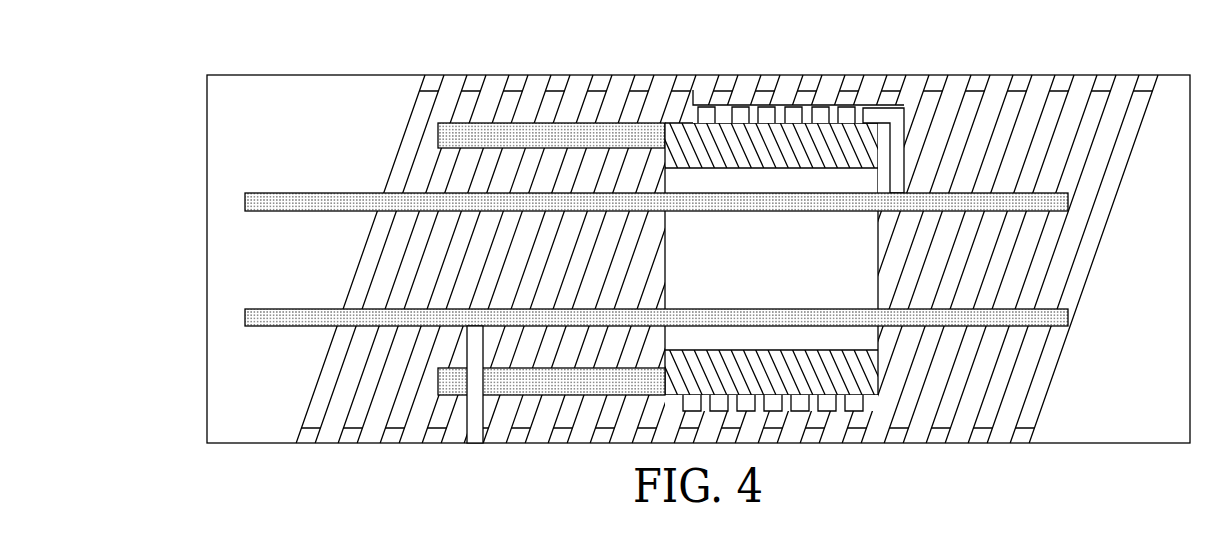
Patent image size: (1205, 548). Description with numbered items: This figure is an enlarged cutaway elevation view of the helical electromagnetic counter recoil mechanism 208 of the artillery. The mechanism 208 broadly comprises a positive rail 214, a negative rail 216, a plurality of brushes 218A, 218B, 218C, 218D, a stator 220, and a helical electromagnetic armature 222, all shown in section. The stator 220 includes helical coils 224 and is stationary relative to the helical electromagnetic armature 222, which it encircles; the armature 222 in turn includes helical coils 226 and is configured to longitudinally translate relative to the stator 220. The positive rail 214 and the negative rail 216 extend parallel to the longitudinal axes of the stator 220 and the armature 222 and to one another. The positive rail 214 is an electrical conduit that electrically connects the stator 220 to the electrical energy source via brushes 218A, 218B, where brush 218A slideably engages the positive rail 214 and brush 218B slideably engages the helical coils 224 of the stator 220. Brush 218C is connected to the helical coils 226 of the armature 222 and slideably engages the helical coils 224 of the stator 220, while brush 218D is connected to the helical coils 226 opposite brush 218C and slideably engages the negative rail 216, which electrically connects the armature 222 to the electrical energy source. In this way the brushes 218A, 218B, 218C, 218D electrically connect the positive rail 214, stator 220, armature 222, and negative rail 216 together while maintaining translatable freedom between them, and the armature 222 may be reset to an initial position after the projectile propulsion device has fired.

The helical electromagnetic counter recoil mechanism 208 is at (305, 32).
The positive rail 214 is at (288, 326).
The negative rail 216 is at (305, 193).
The brush 218A is at (483, 327).
The brush 218B is at (472, 418).
The brush 218C is at (690, 95).
The brush 218D is at (897, 187).
The stator 220 is at (1088, 380).
The helical electromagnetic armature 222 is at (783, 273).
The helical coils 224 is at (1077, 283).
The helical coils 226 is at (833, 411).